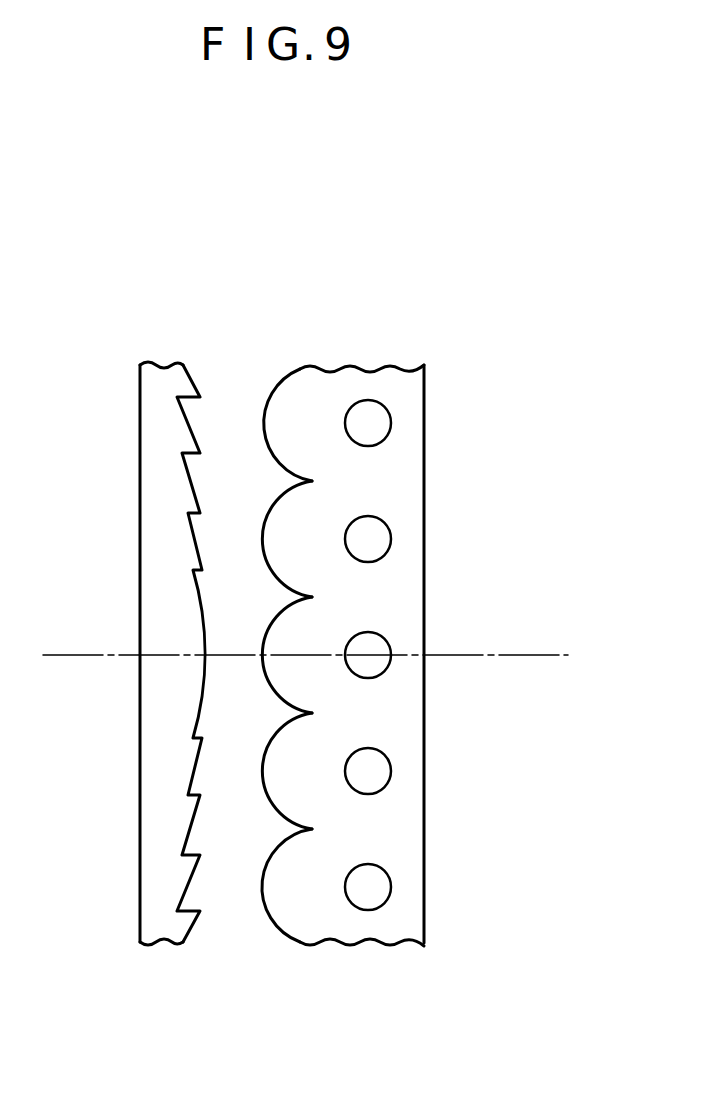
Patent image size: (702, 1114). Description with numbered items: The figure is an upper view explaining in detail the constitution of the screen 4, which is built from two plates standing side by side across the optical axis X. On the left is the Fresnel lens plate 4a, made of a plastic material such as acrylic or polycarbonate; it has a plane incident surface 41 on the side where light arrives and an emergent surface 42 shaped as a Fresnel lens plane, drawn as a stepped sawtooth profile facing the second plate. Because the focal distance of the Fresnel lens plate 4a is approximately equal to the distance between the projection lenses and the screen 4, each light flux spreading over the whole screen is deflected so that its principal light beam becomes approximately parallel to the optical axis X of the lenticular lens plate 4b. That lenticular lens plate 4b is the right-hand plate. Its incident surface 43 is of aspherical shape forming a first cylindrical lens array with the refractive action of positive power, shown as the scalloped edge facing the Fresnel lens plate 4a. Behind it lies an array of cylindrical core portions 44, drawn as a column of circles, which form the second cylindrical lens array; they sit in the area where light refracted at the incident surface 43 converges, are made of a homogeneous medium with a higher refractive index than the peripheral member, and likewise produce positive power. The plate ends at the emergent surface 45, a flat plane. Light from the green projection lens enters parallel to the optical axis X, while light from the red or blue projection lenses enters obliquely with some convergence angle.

The screen 4 is at (350, 262).
The Fresnel lens plate 4a is at (153, 367).
The lenticular lens plate 4b is at (365, 370).
The incident surface 41 is at (140, 450).
The emergent surface 42 is at (197, 443).
The incident surface 43 is at (275, 385).
The cylindrical core portions 44 is at (380, 403).
The emergent surface 45 is at (424, 484).
The optical axis X is at (562, 655).